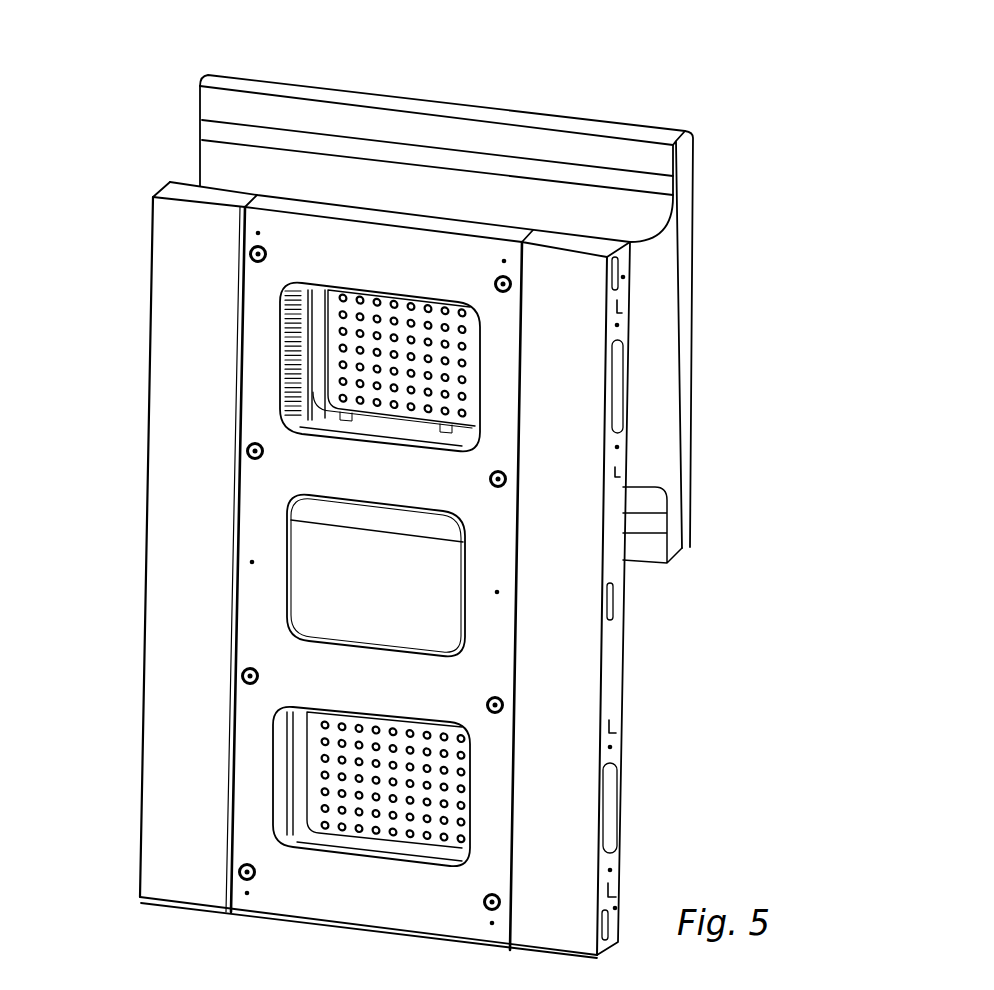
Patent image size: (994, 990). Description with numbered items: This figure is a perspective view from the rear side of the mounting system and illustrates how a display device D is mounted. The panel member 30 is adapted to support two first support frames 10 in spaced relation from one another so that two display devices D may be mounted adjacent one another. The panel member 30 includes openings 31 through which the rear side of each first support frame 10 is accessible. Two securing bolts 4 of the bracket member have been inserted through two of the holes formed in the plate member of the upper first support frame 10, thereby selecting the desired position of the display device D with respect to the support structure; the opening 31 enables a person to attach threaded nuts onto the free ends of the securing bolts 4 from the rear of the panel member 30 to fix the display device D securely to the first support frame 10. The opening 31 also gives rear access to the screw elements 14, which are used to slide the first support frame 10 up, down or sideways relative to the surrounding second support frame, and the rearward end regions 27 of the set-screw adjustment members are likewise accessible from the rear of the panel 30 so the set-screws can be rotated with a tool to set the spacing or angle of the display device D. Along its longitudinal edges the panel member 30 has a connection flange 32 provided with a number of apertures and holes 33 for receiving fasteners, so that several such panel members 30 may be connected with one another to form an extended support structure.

The display device D is at (637, 205).
The securing bolts 4 is at (407, 375).
The first support frame 10 is at (425, 310).
The screw elements 14 is at (313, 392).
The rearward end regions 27 is at (250, 251).
The panel member 30 is at (563, 653).
The openings 31 is at (283, 412).
The connection flange 32 is at (613, 640).
The apertures and holes 33 is at (623, 310).